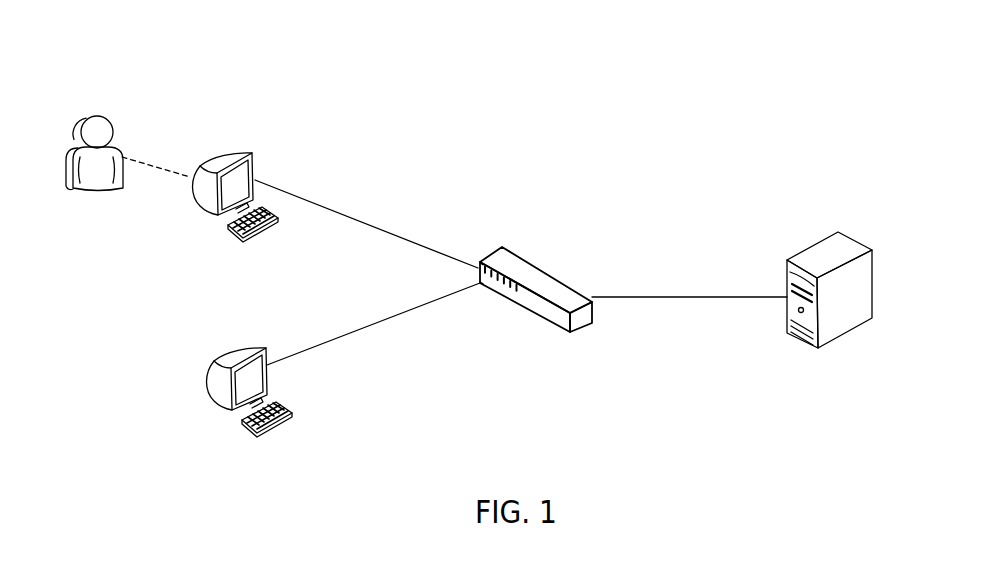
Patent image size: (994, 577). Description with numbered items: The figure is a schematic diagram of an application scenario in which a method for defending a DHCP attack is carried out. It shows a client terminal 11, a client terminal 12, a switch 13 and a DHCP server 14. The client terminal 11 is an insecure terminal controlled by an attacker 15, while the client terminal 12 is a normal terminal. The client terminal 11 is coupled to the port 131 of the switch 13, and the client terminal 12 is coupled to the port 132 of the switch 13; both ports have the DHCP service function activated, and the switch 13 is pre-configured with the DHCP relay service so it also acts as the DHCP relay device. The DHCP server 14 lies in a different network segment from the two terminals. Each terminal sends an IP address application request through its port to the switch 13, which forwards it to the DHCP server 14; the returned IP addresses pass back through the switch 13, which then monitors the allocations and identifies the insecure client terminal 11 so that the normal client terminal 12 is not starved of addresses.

The client terminal 11 is at (229, 153).
The client terminal 12 is at (243, 348).
The switch 13 is at (548, 273).
The port 131 is at (478, 266).
The port 132 is at (480, 285).
The DHCP server 14 is at (850, 238).
The attacker 15 is at (113, 116).